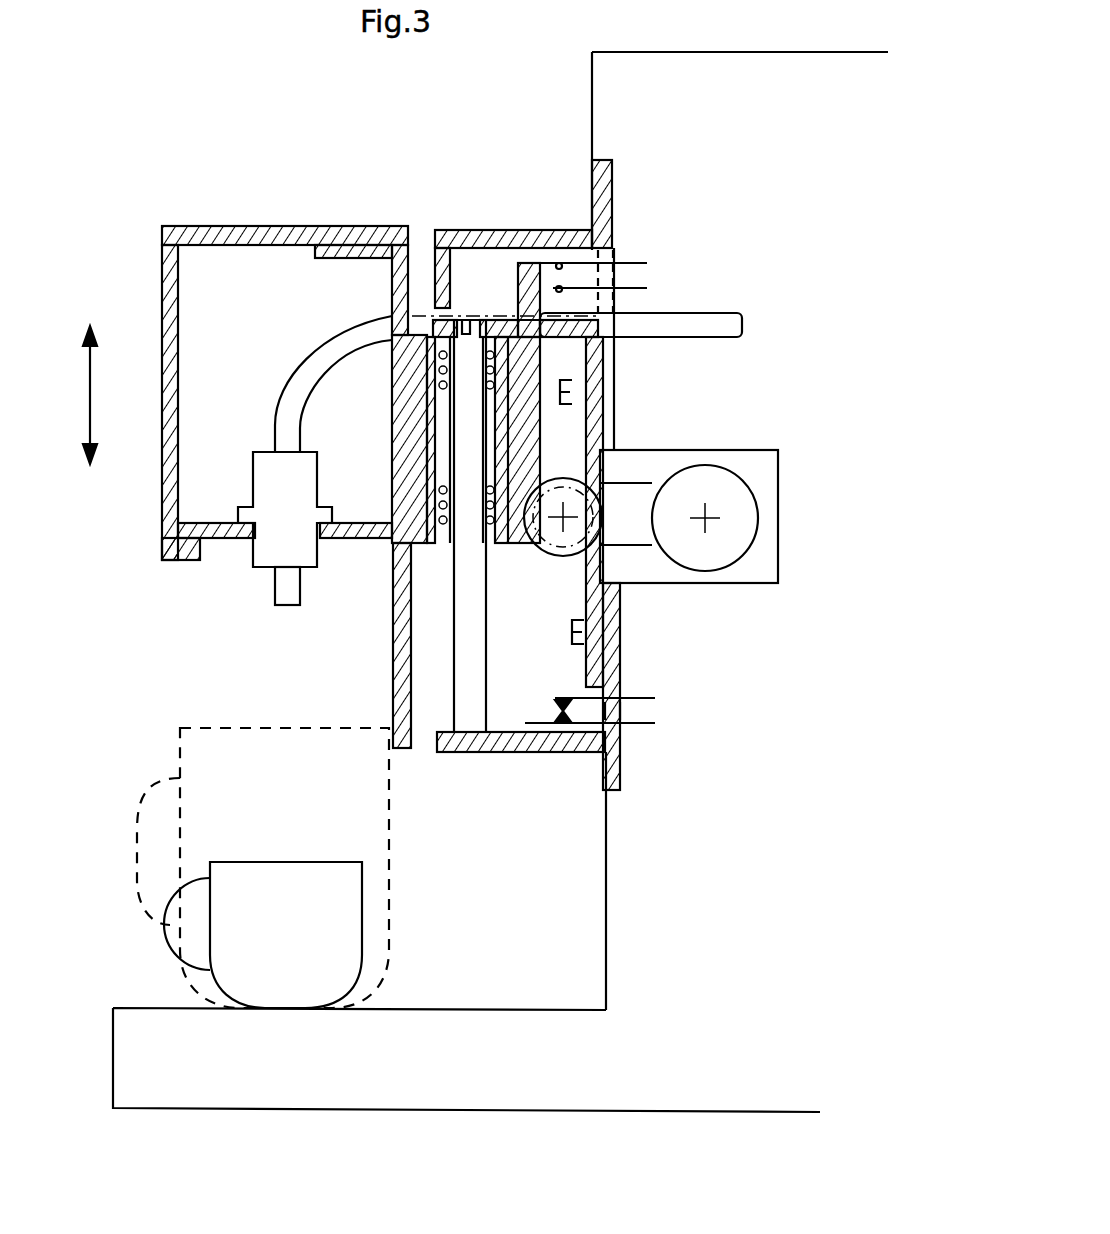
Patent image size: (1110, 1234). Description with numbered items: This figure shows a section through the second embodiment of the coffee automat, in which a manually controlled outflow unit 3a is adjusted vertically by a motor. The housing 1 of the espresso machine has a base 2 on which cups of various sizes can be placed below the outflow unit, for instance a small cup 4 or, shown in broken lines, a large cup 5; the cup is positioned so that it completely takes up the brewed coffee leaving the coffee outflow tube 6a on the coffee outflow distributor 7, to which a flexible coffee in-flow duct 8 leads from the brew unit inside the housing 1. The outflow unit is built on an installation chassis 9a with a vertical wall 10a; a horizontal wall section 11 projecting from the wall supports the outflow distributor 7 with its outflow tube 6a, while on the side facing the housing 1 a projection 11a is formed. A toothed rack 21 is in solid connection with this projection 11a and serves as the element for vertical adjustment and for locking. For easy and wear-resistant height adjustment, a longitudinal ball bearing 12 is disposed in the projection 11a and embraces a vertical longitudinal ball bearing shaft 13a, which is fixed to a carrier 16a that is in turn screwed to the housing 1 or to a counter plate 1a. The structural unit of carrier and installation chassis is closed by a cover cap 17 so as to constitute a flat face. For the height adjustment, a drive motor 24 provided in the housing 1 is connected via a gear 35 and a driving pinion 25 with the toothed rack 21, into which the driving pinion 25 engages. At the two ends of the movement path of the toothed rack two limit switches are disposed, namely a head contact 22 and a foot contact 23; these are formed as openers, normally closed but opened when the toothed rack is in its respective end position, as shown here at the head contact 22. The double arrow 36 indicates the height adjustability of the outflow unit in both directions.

The housing 1 is at (606, 76).
The counter plate 1a is at (622, 768).
The base 2 is at (148, 1050).
The outflow unit 3a is at (163, 252).
The small cup 4 is at (226, 934).
The large cup 5 is at (182, 736).
The coffee outflow tube 6a is at (274, 592).
The coffee outflow distributor 7 is at (252, 560).
The coffee in-flow duct 8 is at (744, 326).
The installation chassis 9a is at (318, 262).
The vertical wall 10a is at (406, 648).
The horizontal wall section 11 is at (324, 540).
The projection 11a is at (396, 540).
The longitudinal ball bearing 12 is at (412, 560).
The longitudinal ball bearing shaft 13a is at (470, 700).
The carrier 16a is at (510, 228).
The cover cap 17 is at (160, 290).
The toothed rack 21 is at (524, 544).
The head contact 22 is at (652, 272).
The foot contact 23 is at (658, 712).
The drive motor 24 is at (720, 576).
The driving pinion 25 is at (558, 560).
The gear 35 is at (636, 540).
The double arrow 36 is at (88, 398).